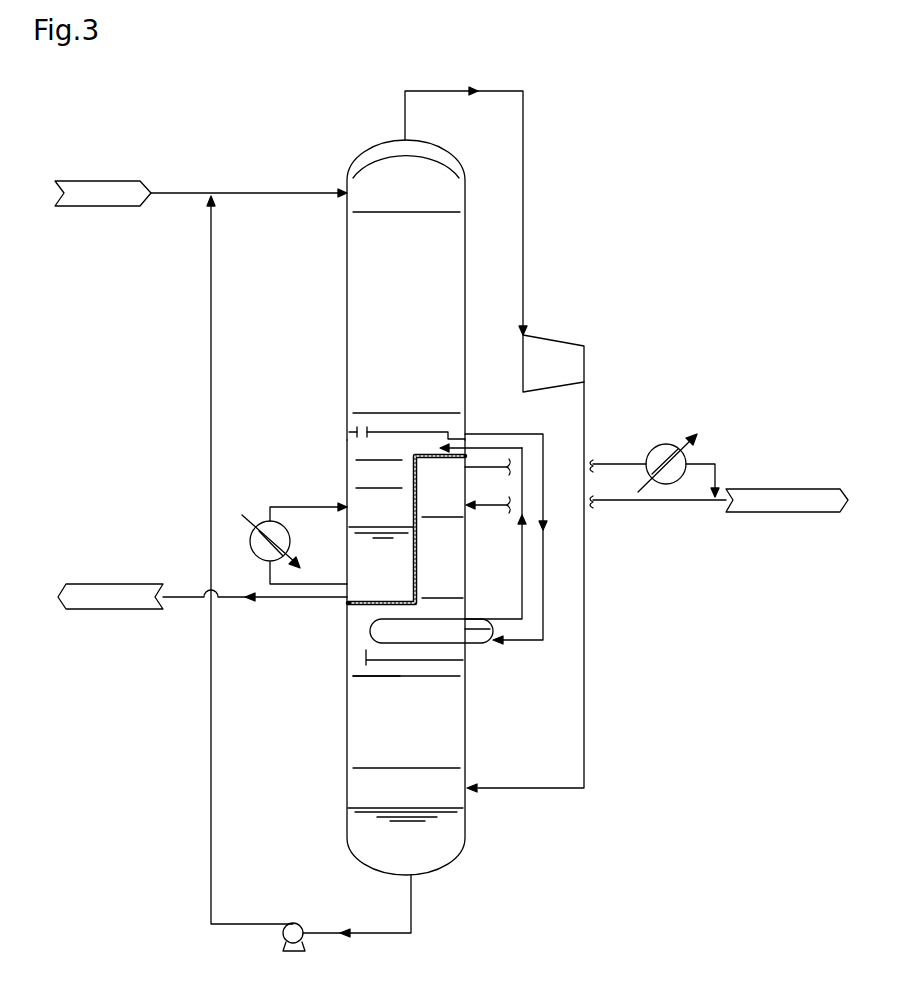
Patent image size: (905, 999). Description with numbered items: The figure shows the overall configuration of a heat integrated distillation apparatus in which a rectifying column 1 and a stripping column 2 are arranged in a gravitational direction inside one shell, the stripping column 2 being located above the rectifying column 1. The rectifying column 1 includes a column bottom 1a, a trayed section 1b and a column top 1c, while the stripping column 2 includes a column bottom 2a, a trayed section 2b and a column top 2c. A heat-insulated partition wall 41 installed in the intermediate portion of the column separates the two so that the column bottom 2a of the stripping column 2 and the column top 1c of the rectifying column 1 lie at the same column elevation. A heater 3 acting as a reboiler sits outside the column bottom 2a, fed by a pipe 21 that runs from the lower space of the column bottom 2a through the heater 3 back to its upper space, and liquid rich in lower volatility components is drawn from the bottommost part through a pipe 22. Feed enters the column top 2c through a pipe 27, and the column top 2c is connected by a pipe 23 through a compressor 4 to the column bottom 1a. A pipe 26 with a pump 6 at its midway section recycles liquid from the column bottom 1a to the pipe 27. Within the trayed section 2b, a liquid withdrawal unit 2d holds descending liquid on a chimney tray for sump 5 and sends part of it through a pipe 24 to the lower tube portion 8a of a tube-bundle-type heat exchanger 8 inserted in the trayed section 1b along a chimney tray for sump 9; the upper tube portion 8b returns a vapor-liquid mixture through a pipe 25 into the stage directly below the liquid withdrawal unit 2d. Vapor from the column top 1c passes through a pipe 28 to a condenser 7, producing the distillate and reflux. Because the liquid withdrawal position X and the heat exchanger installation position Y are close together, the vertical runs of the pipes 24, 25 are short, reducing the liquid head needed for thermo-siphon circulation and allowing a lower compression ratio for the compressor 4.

The rectifying column 1 is at (338, 723).
The column bottom 1a is at (365, 795).
The trayed section 1b is at (412, 718).
The column top 1c is at (443, 502).
The stripping column 2 is at (340, 323).
The column bottom 2a is at (370, 517).
The trayed section 2b is at (433, 288).
The column top 2c is at (433, 163).
The liquid withdrawal unit 2d is at (423, 417).
The heater 3 is at (255, 555).
The compressor 4 is at (560, 336).
The chimney tray for sump 5 is at (395, 432).
The pump 6 is at (294, 924).
The condenser 7 is at (668, 443).
The tube-bundle-type heat exchanger 8 is at (362, 632).
The lower tube portion 8a is at (410, 650).
The upper tube portion 8b is at (452, 619).
The chimney tray for sump 9 is at (410, 690).
The pipe 21 is at (290, 507).
The pipe 22 is at (183, 592).
The pipe 23 is at (523, 128).
The pipe 24 is at (545, 434).
The pipe 25 is at (518, 545).
The pipe 26 is at (211, 282).
The pipe 27 is at (262, 190).
The pipe 28 is at (617, 464).
The partition wall 41 is at (410, 552).
The liquid withdrawal position X is at (467, 433).
The heat exchanger installation position Y is at (493, 645).